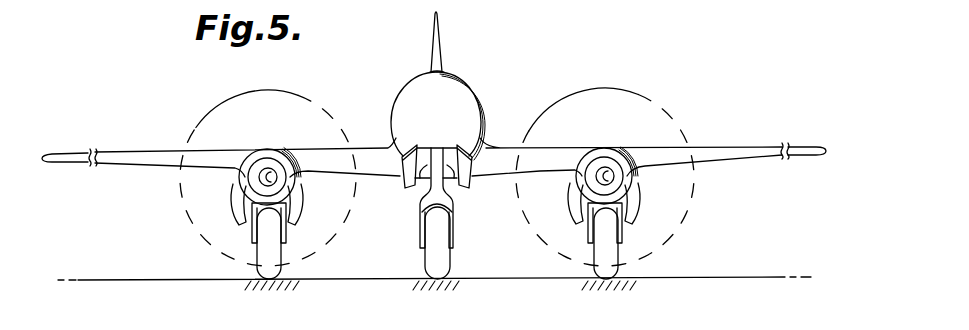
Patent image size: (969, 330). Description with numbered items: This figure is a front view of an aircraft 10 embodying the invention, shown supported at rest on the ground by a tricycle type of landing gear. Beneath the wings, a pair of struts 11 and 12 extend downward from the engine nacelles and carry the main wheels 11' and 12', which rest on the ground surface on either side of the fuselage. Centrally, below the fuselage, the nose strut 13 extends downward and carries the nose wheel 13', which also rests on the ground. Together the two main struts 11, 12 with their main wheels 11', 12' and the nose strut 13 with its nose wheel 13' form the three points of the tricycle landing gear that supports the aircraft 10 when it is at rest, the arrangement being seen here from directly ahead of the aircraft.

The aircraft 10 is at (467, 104).
The strut 11 is at (291, 225).
The main wheel 11' is at (287, 259).
The strut 12 is at (635, 236).
The main wheel 12' is at (625, 260).
The nose strut 13 is at (456, 198).
The nose wheel 13' is at (462, 243).